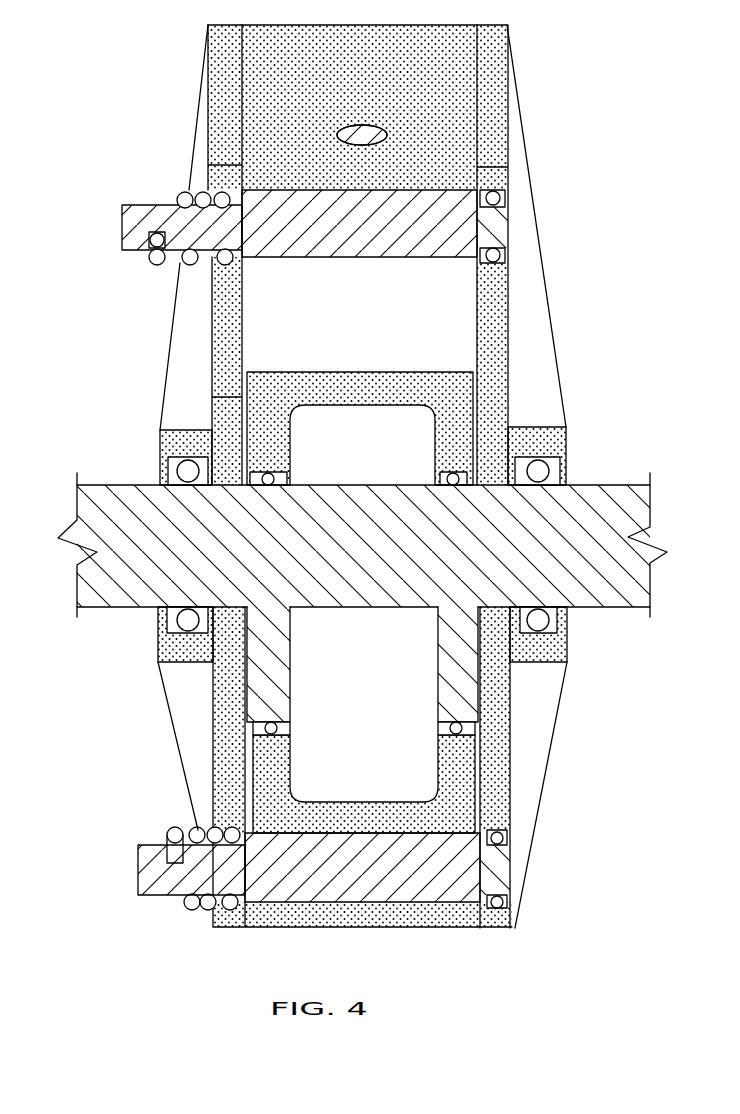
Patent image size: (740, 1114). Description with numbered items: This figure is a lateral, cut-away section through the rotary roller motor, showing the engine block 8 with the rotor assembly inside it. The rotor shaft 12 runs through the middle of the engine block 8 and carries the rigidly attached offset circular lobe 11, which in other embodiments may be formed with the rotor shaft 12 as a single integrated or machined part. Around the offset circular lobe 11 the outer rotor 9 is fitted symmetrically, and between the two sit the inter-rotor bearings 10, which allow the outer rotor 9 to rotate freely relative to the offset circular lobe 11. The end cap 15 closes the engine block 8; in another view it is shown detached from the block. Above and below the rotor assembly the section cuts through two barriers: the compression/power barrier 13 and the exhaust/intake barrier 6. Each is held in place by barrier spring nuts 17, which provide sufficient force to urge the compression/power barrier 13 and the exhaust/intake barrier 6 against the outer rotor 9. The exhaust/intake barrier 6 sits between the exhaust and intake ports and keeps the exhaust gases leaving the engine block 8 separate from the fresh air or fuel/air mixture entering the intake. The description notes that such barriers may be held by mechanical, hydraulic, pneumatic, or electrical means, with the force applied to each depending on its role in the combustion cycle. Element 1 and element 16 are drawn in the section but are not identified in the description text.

The sensor element 1 is at (332, 134).
The exhaust/intake barrier 6 is at (188, 897).
The engine block 8 is at (433, 78).
The outer rotor 9 is at (233, 397).
The inter-rotor bearings 10 is at (498, 724).
The offset circular lobe 11 is at (463, 688).
The rotor shaft 12 is at (614, 485).
The compression/power barrier 13 is at (122, 229).
The end cap 15 is at (189, 380).
The bearing 16 is at (197, 623).
The barrier spring nuts 17 is at (166, 262).